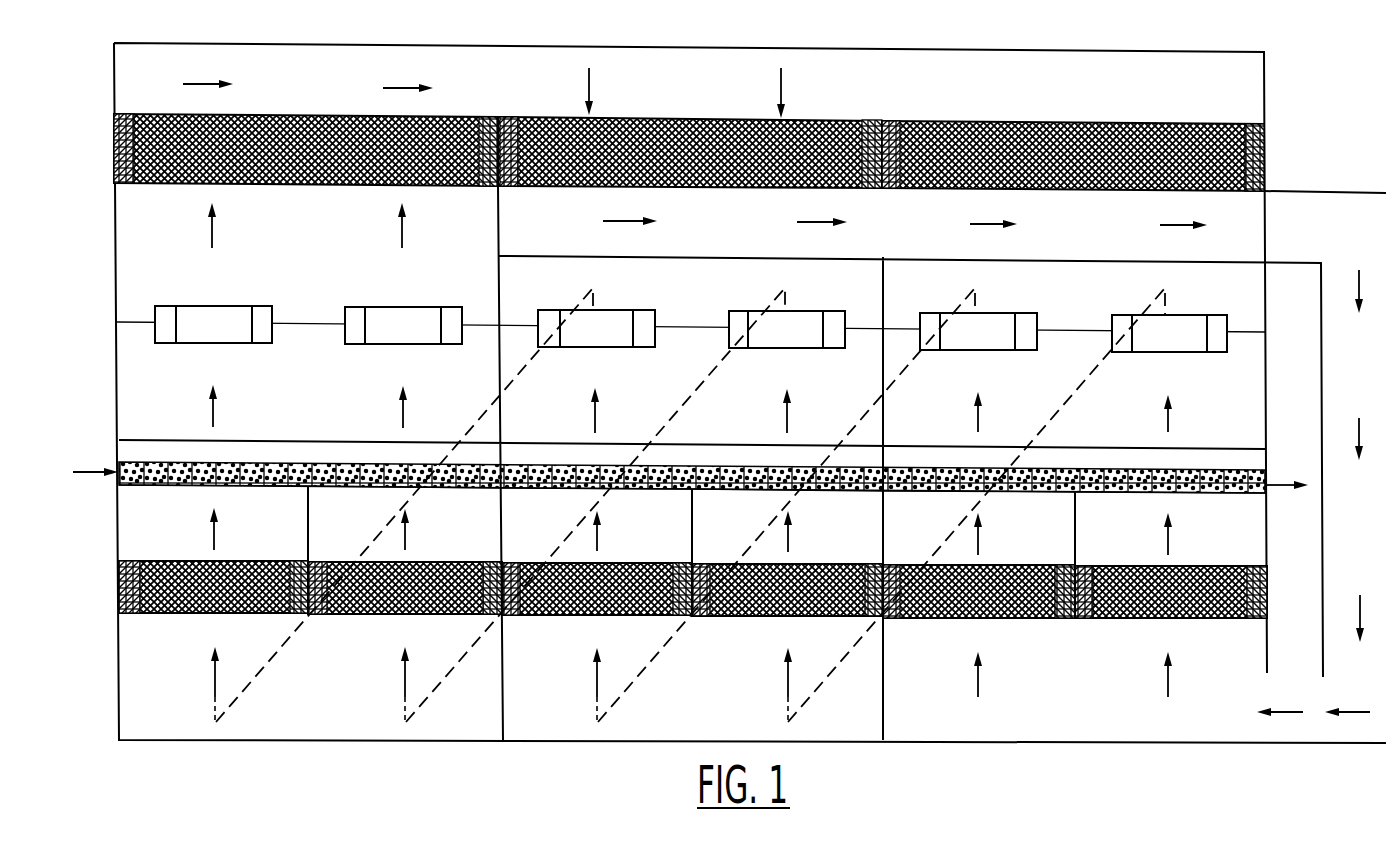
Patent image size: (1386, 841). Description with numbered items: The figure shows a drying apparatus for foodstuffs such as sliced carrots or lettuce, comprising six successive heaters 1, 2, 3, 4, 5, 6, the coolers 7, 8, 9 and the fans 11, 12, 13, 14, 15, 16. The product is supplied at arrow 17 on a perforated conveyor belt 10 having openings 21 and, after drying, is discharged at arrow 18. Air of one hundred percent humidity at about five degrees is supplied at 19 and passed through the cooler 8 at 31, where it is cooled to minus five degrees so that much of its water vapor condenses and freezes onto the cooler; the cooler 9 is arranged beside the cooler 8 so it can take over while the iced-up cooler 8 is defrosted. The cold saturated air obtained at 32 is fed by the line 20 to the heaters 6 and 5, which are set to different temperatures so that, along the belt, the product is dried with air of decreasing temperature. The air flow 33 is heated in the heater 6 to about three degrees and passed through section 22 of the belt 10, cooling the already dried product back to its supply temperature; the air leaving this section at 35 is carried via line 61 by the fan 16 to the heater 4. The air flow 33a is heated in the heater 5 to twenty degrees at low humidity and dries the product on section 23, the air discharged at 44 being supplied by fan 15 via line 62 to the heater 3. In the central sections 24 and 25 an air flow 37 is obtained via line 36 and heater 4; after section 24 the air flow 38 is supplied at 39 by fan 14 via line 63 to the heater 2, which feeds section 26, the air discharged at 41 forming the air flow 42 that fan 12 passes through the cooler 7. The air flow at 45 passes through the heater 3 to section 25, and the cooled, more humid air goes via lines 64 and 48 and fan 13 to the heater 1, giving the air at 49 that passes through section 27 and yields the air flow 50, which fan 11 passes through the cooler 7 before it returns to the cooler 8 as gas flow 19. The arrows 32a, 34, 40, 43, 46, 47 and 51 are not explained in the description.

The heater 1 is at (182, 614).
The heater 2 is at (375, 614).
The heater 3 is at (558, 615).
The heater 4 is at (750, 616).
The heater 5 is at (950, 617).
The heater 6 is at (1138, 618).
The cooler 7 is at (291, 114).
The cooler 8 is at (662, 118).
The cooler 9 is at (981, 124).
The perforated conveyor belt 10 is at (118, 481).
The fan 11 is at (226, 313).
The fan 12 is at (416, 314).
The fan 13 is at (610, 320).
The fan 14 is at (803, 320).
The fan 15 is at (995, 322).
The fan 16 is at (1185, 325).
The supply arrow 17 is at (84, 468).
The discharge arrow 18 is at (1268, 483).
The air supply 19 is at (197, 84).
The line 20 is at (1323, 215).
The openings 21 is at (164, 466).
The belt section 22 is at (1145, 492).
The belt section 23 is at (955, 491).
The belt section 24 is at (765, 490).
The belt section 25 is at (575, 489).
The belt section 26 is at (385, 488).
The belt section 27 is at (197, 487).
The cooler passage point 31 is at (589, 80).
The cooled air 32 is at (618, 221).
The return air flow 32a is at (1290, 710).
The air flow 33 is at (1166, 688).
The air flow 33a is at (976, 688).
The air flow 34 is at (1168, 537).
The air leaving section 22 35 is at (1168, 424).
The line 36 is at (786, 690).
The air flow 37 is at (788, 534).
The air flow 38 is at (787, 418).
The supply point 39 is at (403, 688).
The air flow 40 is at (405, 532).
The air discharge 41 is at (403, 416).
The air flow 42 is at (402, 232).
The air flow 43 is at (978, 537).
The air discharge 44 is at (978, 421).
The air flow 45 is at (595, 690).
The air flow 46 is at (597, 534).
The air flow 47 is at (595, 418).
The line 48 is at (213, 688).
The heated air 49 is at (214, 532).
The air flow 50 is at (213, 415).
The air flow 51 is at (212, 232).
The line 61 is at (1095, 382).
The line 62 is at (898, 380).
The line 63 is at (707, 386).
The line 64 is at (523, 368).